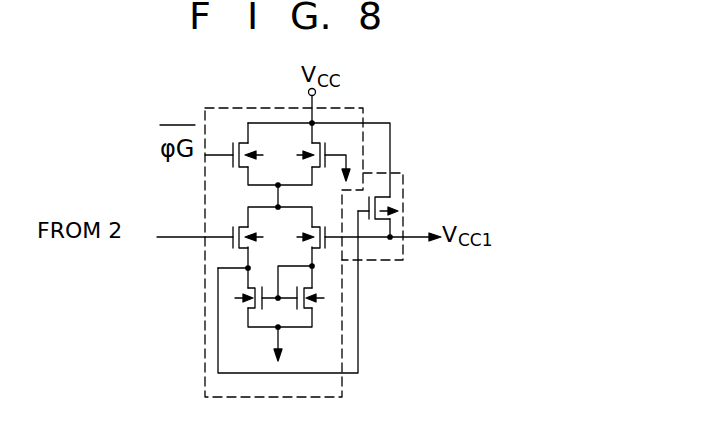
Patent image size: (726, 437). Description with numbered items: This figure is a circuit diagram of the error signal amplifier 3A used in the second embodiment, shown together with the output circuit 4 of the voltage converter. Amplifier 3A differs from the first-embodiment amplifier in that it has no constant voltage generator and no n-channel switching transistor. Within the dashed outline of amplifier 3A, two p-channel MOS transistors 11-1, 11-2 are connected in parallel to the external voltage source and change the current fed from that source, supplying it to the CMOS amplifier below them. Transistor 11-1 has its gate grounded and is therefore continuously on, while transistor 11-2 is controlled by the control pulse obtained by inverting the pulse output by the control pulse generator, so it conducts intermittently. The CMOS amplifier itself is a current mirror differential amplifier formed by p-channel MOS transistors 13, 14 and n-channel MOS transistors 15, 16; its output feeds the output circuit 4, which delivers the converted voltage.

The error signal amplifier 3A is at (363, 108).
The output circuit 4 is at (403, 180).
The p-channel MOS transistor 11-1 is at (310, 145).
The p-channel MOS transistor 11-2 is at (231, 170).
The p-channel MOS transistor 13 is at (322, 253).
The p-channel MOS transistor 14 is at (228, 244).
The n-channel MOS transistor 15 is at (313, 308).
The n-channel MOS transistor 16 is at (240, 308).